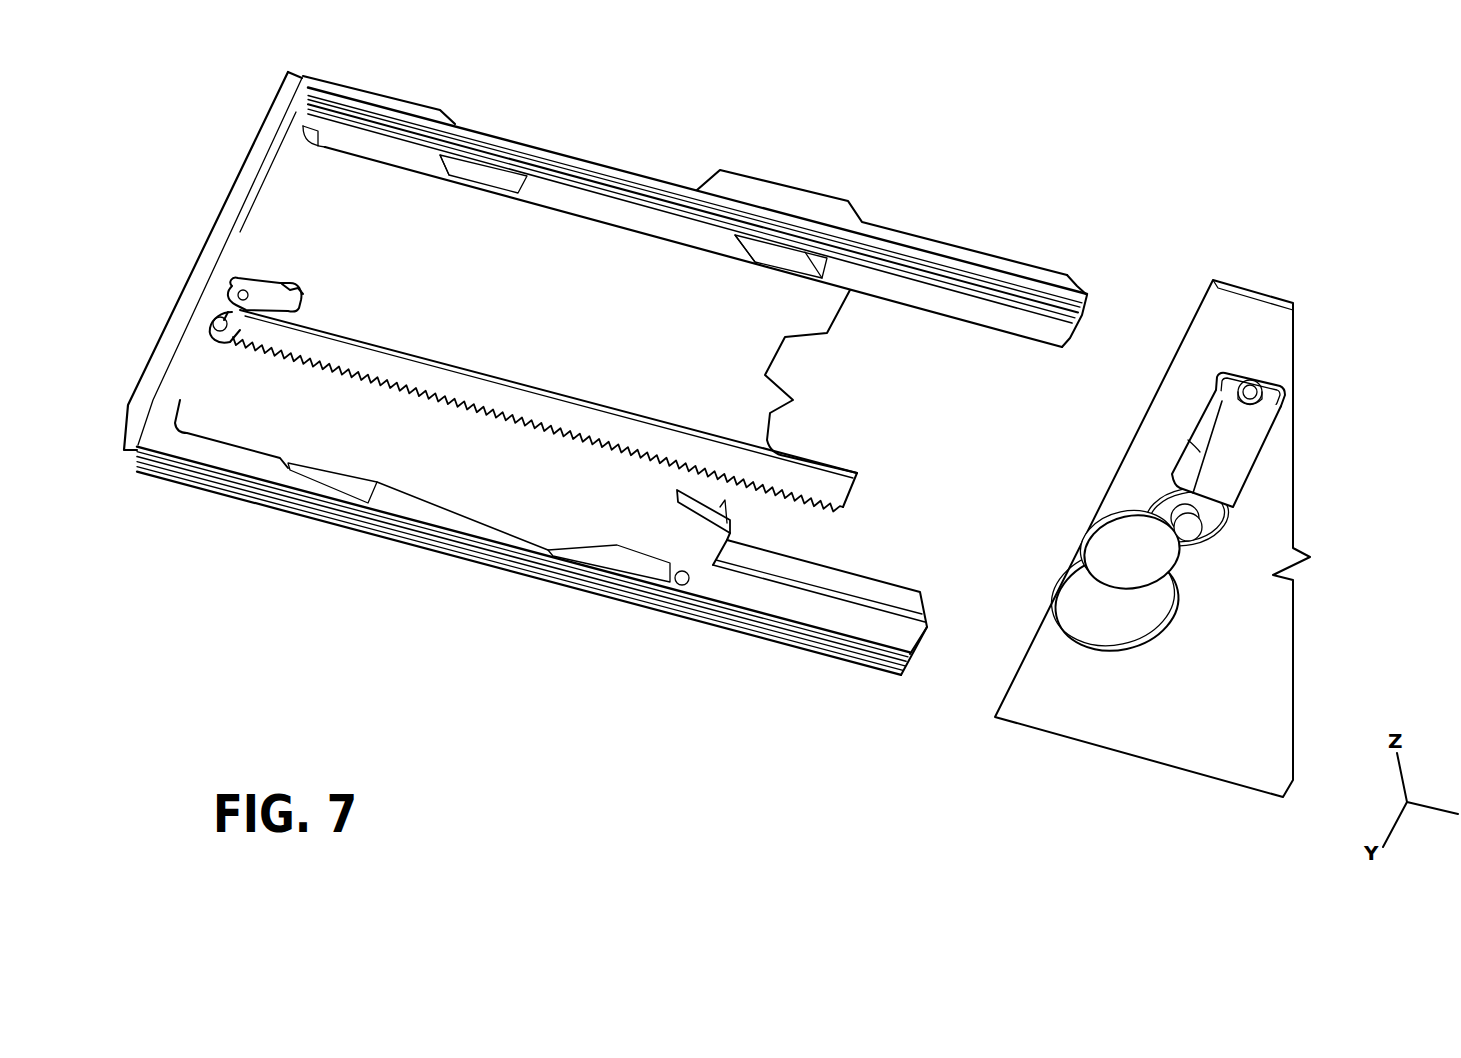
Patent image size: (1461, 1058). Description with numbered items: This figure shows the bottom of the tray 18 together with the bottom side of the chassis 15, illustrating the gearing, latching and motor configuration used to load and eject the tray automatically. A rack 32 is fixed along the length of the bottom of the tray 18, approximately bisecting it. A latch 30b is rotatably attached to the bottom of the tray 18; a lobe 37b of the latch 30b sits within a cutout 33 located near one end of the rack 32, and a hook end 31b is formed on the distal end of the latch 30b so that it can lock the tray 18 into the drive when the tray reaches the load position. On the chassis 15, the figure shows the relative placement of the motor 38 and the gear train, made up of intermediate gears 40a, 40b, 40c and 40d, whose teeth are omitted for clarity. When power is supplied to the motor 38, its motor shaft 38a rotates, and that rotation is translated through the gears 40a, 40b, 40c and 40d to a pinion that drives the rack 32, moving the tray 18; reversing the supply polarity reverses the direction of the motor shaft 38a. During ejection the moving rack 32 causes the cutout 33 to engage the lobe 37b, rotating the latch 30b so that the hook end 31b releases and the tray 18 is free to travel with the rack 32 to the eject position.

The chassis 15 is at (1187, 283).
The tray 18 is at (483, 600).
The latch 30b is at (266, 284).
The hook end 31b is at (303, 300).
The rack 32 is at (497, 387).
The cutout 33 is at (225, 316).
The lobe 37b is at (255, 338).
The motor 38 is at (1191, 454).
The motor shaft 38a is at (1230, 513).
The intermediate gear 40a is at (1155, 500).
The intermediate gear 40b is at (1085, 538).
The intermediate gear 40c is at (1197, 537).
The intermediate gear 40d is at (1062, 640).